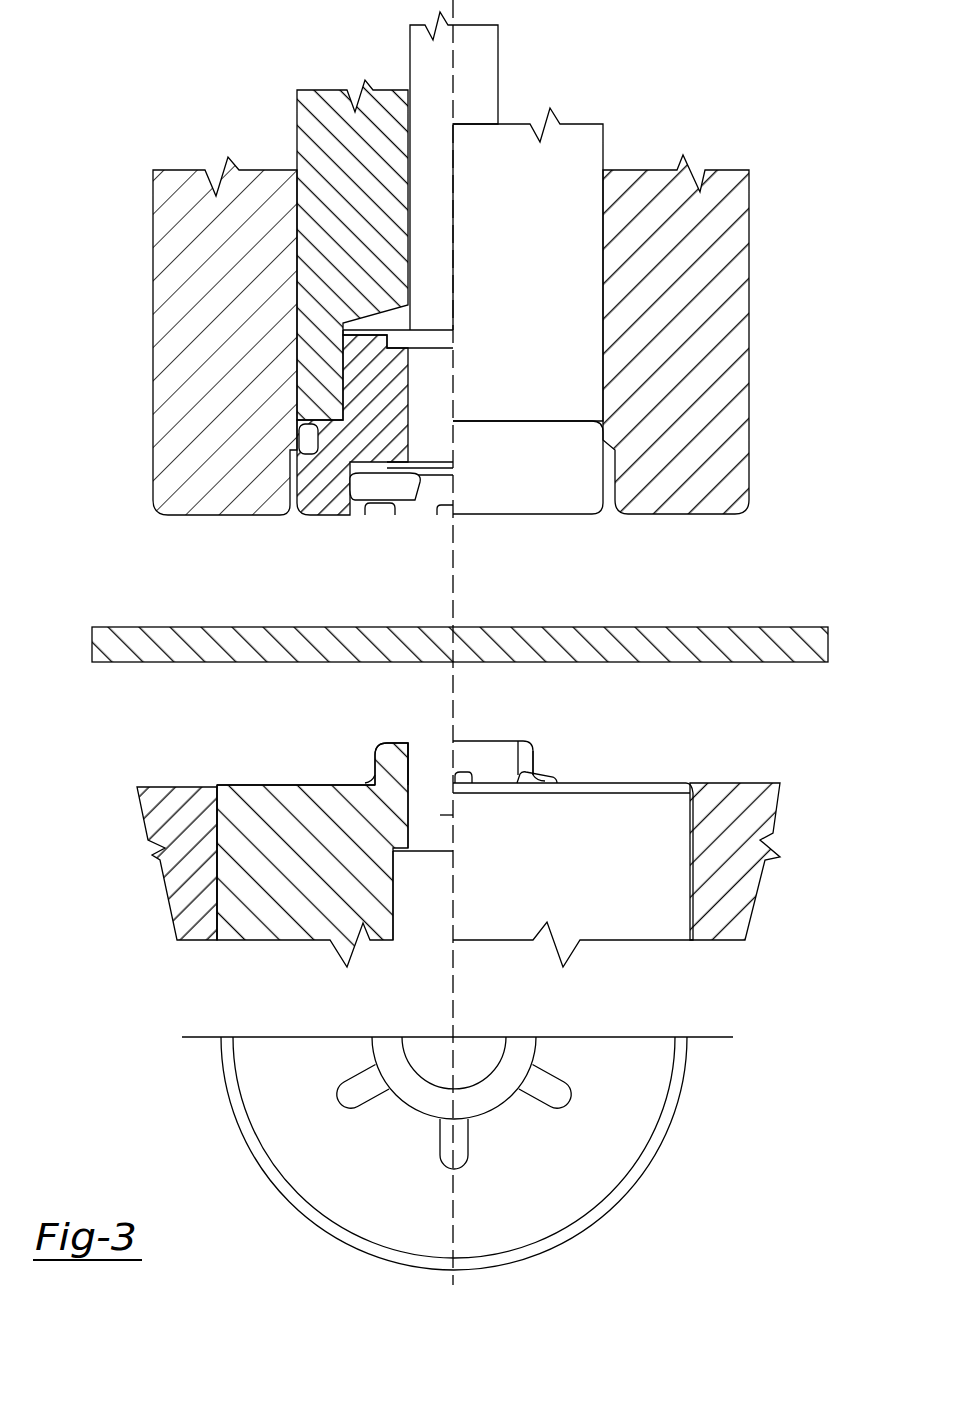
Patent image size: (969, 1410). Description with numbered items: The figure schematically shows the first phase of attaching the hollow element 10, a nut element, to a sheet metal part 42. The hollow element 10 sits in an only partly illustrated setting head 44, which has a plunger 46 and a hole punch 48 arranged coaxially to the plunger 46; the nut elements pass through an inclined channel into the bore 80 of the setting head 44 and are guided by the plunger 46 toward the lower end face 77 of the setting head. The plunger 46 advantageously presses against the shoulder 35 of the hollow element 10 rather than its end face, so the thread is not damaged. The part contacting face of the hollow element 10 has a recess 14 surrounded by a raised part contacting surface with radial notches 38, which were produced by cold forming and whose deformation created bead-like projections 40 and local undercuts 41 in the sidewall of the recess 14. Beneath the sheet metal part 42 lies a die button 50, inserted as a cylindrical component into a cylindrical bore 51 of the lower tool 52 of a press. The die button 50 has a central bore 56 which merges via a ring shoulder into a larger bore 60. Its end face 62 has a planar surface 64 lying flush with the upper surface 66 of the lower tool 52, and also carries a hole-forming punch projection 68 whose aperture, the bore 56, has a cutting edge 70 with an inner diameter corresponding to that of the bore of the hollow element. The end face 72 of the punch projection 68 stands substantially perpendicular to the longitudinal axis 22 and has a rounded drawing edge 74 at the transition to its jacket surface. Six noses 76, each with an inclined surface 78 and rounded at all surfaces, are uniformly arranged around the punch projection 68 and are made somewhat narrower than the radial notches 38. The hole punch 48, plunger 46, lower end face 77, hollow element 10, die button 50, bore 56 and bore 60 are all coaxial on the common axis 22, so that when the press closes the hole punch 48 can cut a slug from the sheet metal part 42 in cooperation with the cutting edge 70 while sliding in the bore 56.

The hollow element 10 is at (320, 515).
The recess 14 is at (415, 505).
The central axis 22 is at (455, 562).
The shoulder 35 is at (300, 445).
The radial notches 38 is at (372, 518).
The bead-like projections 40 is at (455, 453).
The local undercuts 41 is at (407, 500).
The sheet metal part 42 is at (716, 628).
The setting head 44 is at (755, 290).
The plunger 46 is at (603, 145).
The hole punch 48 is at (498, 76).
The die button 50 is at (299, 940).
The cylindrical bore 51 is at (690, 882).
The lower tool 52 is at (172, 877).
The central bore 56 is at (435, 815).
The larger bore 60 is at (395, 913).
The end face 62 is at (290, 785).
The planar surface 64 is at (252, 785).
The upper surface 66 is at (172, 785).
The hole-forming punch projection 68 is at (377, 755).
The cutting edge 70 is at (410, 762).
The end face 72 is at (398, 742).
The rounded drawing edge 74 is at (527, 770).
The noses 76 is at (468, 775).
The lower end face 77 is at (210, 515).
The inclined surface 78 is at (372, 783).
The bore 80 is at (297, 197).